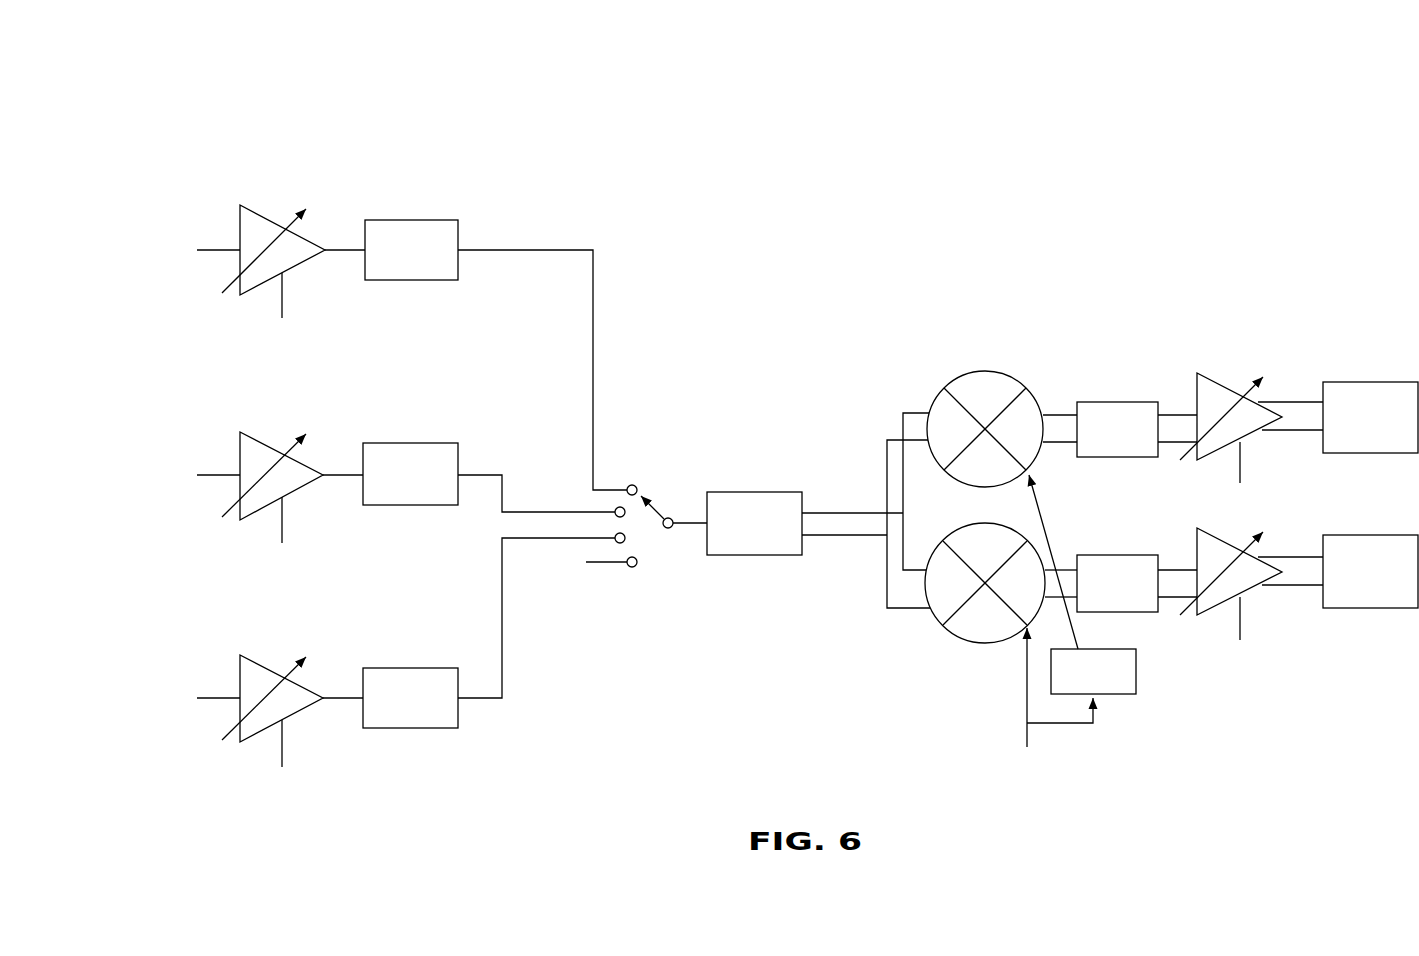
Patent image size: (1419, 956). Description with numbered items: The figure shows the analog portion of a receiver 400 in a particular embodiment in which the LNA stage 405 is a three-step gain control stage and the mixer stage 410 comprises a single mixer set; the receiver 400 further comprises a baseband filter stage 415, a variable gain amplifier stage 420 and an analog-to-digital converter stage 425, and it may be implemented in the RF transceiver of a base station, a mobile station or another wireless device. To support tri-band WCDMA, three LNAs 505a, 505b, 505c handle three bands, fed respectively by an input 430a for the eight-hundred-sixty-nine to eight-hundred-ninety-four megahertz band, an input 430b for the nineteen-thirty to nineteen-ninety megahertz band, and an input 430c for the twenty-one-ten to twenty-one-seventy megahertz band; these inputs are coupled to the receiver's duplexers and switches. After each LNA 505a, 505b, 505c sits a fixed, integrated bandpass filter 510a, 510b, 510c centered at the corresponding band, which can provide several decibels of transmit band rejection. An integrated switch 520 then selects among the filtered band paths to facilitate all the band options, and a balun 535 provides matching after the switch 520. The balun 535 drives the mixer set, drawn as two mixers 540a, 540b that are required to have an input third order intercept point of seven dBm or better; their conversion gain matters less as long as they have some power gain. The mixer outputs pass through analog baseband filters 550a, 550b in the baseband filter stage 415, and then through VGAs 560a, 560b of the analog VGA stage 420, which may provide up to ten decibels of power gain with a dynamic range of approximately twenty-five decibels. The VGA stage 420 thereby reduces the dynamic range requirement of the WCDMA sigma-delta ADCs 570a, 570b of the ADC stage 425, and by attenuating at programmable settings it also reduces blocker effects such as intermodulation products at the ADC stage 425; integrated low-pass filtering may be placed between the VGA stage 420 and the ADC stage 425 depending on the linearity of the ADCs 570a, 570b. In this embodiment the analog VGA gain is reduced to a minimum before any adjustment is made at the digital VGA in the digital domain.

The receiver 400 is at (841, 86).
The LNA stage 405 is at (366, 183).
The mixer stage 410 is at (911, 305).
The baseband filter stage 415 is at (1093, 311).
The variable gain amplifier stage 420 is at (1210, 296).
The analog-to-digital converter stage 425 is at (1340, 291).
The input 430a is at (184, 251).
The input 430b is at (184, 476).
The input 430c is at (184, 699).
The LNA 505a is at (273, 222).
The LNA 505b is at (273, 447).
The LNA 505c is at (273, 670).
The bandpass filter 510a is at (380, 264).
The bandpass filter 510b is at (380, 489).
The bandpass filter 510c is at (380, 712).
The integrated switch 520 is at (603, 563).
The balun 535 is at (730, 537).
The mixer 540a is at (985, 368).
The mixer 540b is at (985, 643).
The baseband filter 550a is at (1118, 402).
The baseband filter 550b is at (1118, 555).
The VGA 560a is at (1233, 385).
The VGA 560b is at (1250, 590).
The ADC 570a is at (1372, 382).
The ADC 570b is at (1372, 535).